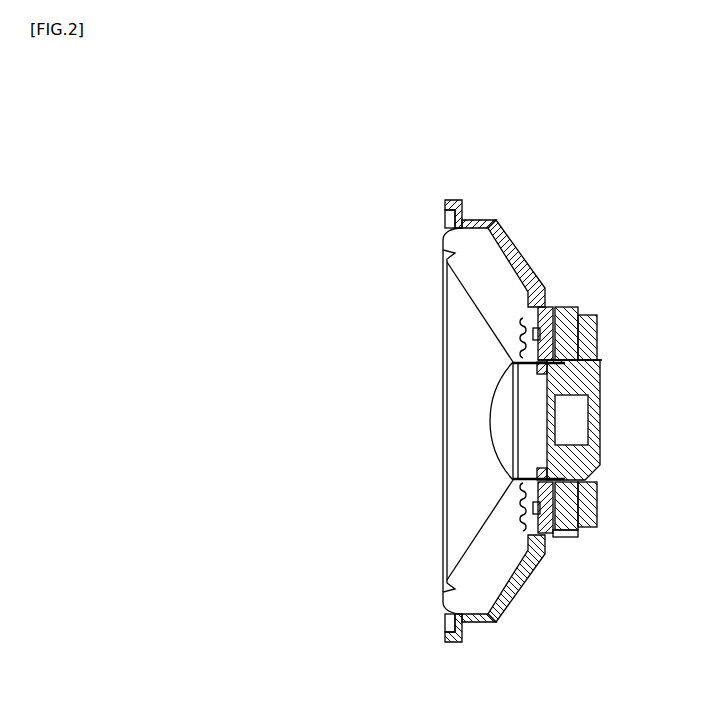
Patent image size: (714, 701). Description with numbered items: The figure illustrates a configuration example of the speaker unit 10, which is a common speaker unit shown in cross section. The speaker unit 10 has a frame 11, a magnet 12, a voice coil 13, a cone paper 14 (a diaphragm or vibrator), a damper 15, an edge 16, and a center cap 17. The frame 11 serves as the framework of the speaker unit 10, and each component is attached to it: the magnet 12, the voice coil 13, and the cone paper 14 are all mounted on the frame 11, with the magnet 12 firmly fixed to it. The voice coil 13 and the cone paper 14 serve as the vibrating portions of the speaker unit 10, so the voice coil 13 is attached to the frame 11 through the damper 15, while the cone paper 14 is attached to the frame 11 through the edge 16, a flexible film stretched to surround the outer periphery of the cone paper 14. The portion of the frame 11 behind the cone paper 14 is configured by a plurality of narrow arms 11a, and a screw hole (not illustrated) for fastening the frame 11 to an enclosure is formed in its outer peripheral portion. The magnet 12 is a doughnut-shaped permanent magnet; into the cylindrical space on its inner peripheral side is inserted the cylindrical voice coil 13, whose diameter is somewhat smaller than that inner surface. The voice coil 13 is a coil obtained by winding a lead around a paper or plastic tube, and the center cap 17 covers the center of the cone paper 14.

The speaker unit 10 is at (542, 212).
The frame 11 is at (478, 222).
The narrow arms 11a is at (532, 258).
The magnet 12 is at (578, 304).
The voice coil 13 is at (598, 358).
The cone paper 14 is at (475, 300).
The damper 15 is at (520, 508).
The edge 16 is at (443, 236).
The center cap 17 is at (490, 398).